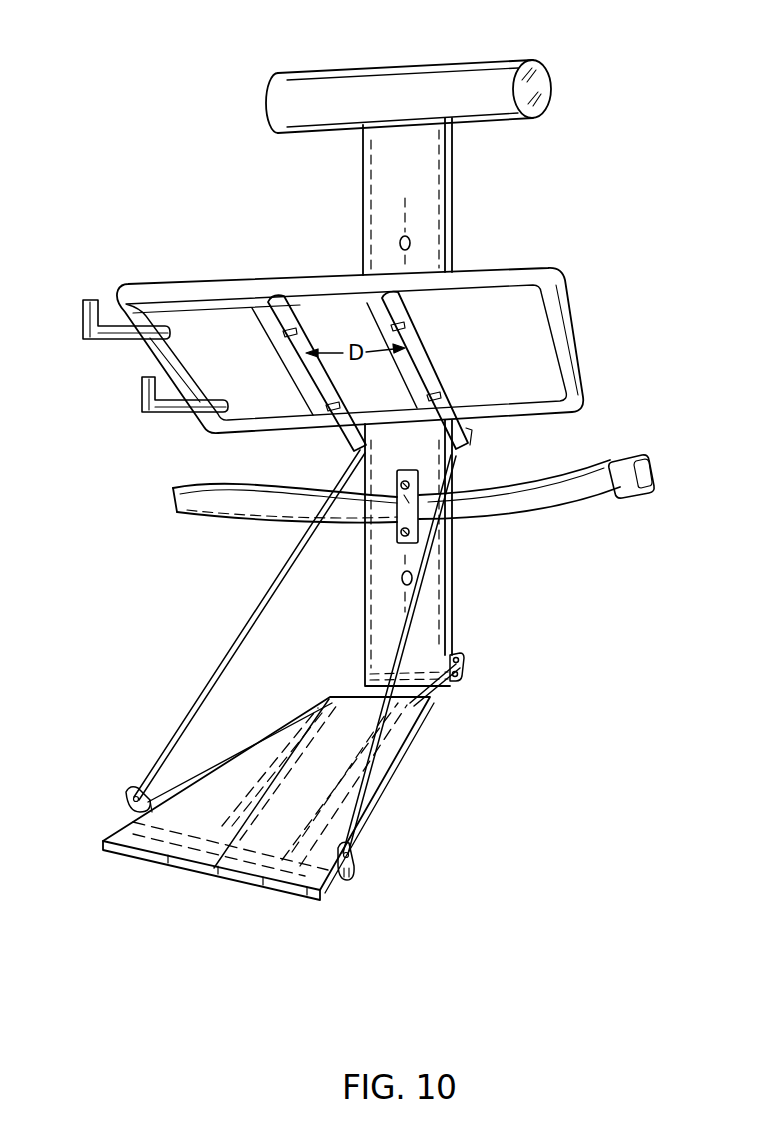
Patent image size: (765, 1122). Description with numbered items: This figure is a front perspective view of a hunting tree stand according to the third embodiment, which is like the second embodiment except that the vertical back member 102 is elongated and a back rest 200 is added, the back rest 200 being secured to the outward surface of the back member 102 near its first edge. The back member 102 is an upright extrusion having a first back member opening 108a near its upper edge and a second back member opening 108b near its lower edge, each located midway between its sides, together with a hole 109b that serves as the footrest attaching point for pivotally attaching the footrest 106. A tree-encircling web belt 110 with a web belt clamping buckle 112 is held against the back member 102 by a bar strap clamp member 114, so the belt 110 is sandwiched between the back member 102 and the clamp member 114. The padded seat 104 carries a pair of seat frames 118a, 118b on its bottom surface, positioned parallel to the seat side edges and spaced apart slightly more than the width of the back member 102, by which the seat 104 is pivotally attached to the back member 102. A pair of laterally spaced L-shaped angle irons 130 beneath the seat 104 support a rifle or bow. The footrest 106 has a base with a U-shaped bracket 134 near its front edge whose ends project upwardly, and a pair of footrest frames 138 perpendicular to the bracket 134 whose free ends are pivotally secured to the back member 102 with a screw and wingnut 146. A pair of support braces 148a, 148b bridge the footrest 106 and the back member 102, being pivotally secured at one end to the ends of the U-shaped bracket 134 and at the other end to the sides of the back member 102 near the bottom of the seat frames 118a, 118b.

The back rest 200 is at (503, 65).
The vertical back member 102 is at (428, 168).
The seat 104 is at (553, 281).
The footrest 106 is at (383, 767).
The first back member opening 108a is at (401, 237).
The second back member opening 108b is at (401, 582).
The hole (footrest attaching point) 109b is at (449, 670).
The web belt 110 is at (530, 493).
The web belt clamping buckle 112 is at (653, 465).
The bar strap clamp member 114 is at (398, 492).
The seat frame 118a is at (273, 330).
The seat frame 118b is at (417, 358).
The L-shaped angle irons 130 is at (143, 415).
The U-shaped bracket 134 is at (330, 873).
The footrest frames 138 is at (357, 767).
The wingnut 146 is at (463, 657).
The support brace 148a is at (276, 578).
The support brace 148b is at (418, 596).